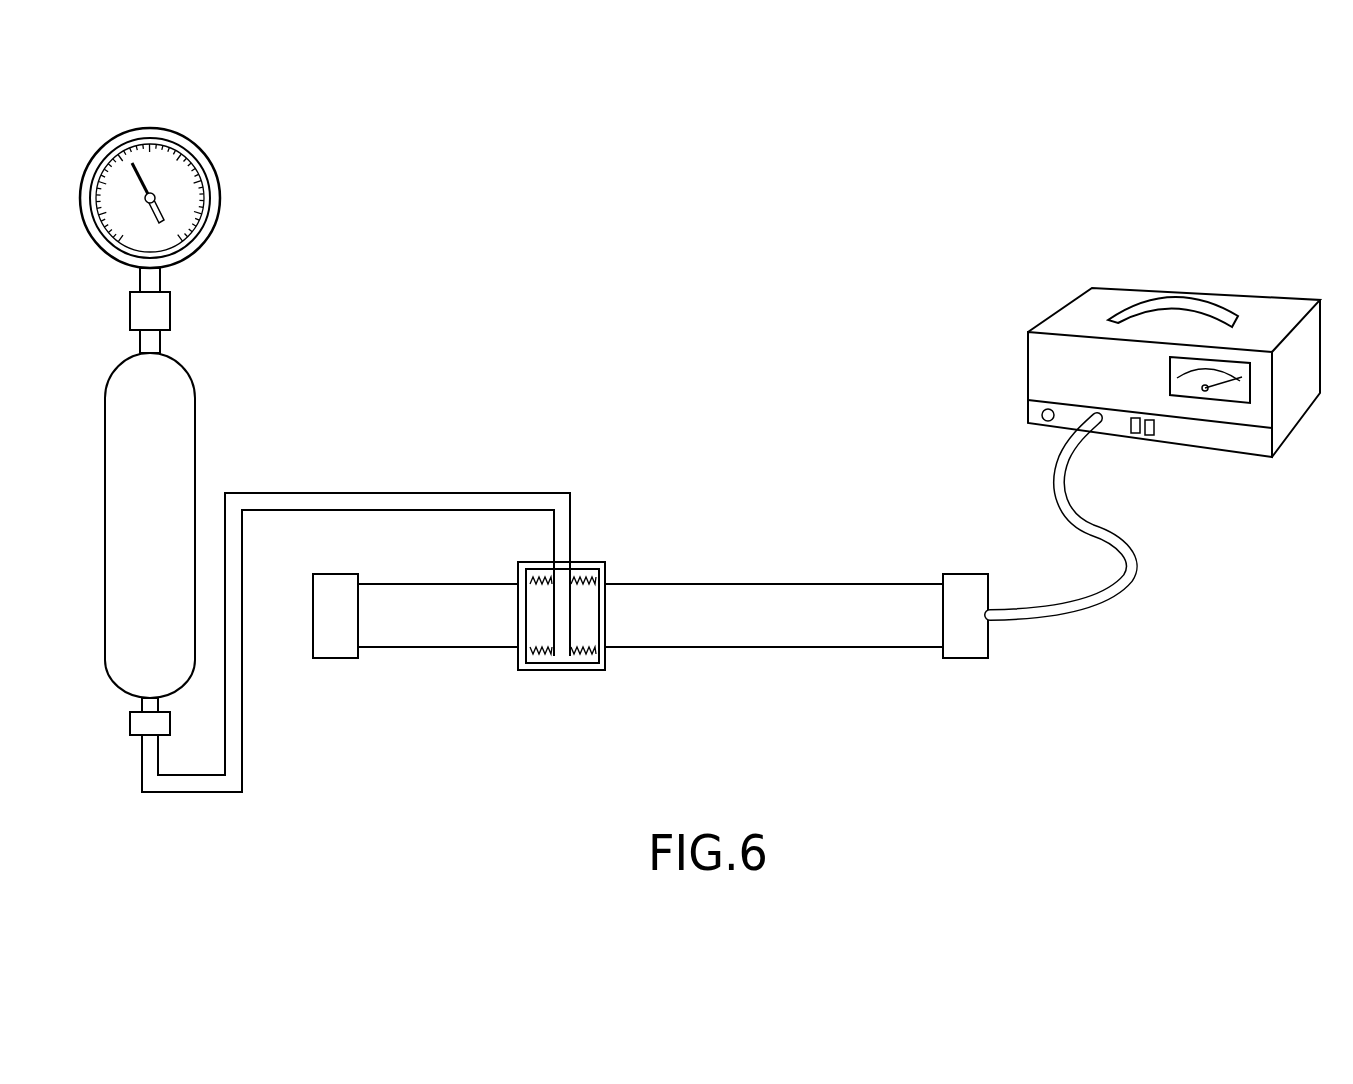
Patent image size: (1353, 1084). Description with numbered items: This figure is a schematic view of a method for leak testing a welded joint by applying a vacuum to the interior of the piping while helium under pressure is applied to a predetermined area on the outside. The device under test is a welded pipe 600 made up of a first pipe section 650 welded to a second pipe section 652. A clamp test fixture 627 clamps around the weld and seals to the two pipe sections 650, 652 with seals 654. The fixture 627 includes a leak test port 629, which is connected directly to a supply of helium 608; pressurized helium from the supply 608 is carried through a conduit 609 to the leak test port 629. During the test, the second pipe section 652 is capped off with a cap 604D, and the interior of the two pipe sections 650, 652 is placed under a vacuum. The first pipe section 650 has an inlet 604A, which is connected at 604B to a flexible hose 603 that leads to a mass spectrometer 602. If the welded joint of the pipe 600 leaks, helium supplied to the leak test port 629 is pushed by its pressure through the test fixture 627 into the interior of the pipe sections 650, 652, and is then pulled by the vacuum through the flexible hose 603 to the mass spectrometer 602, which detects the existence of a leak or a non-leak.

The welded pipe 600 is at (743, 476).
The mass spectrometer 602 is at (1278, 317).
The flexible hose 603 is at (1124, 543).
The supply of helium 608 is at (192, 428).
The conduit 609 is at (420, 498).
The leak test port 629 is at (562, 567).
The clamp test fixture 627 is at (605, 572).
The seals 654 is at (588, 657).
The first pipe section 650 is at (733, 637).
The second pipe section 652 is at (435, 637).
The inlet 604A is at (925, 630).
The connection of inlet to flexible hose 604B is at (978, 638).
The cap 604D is at (330, 647).